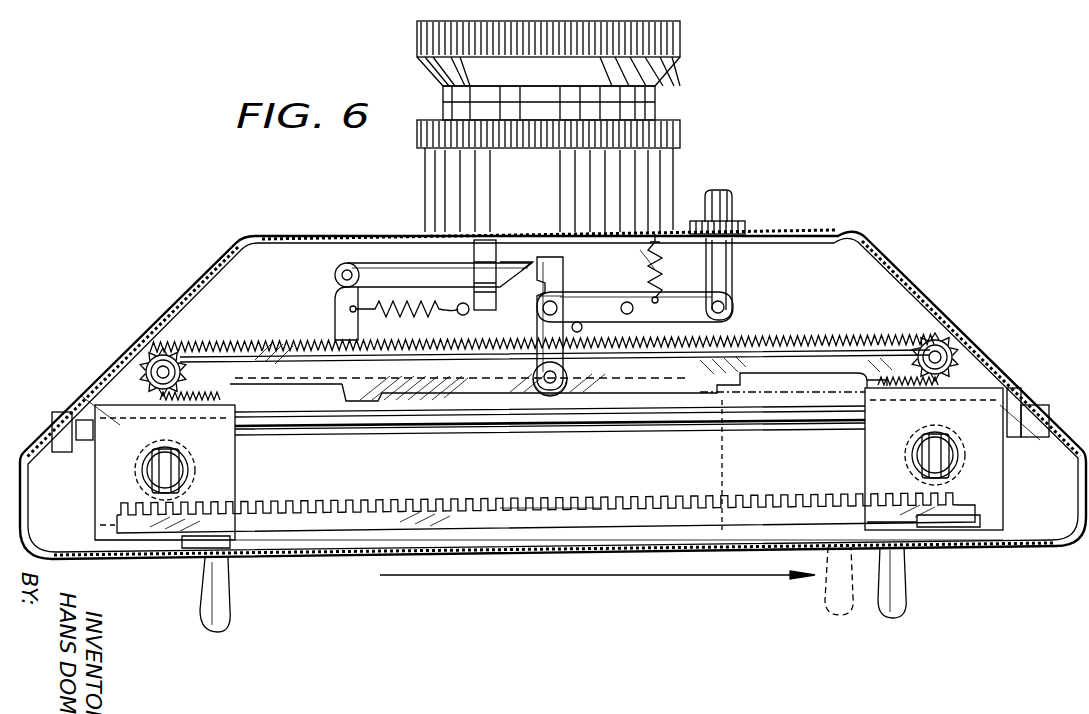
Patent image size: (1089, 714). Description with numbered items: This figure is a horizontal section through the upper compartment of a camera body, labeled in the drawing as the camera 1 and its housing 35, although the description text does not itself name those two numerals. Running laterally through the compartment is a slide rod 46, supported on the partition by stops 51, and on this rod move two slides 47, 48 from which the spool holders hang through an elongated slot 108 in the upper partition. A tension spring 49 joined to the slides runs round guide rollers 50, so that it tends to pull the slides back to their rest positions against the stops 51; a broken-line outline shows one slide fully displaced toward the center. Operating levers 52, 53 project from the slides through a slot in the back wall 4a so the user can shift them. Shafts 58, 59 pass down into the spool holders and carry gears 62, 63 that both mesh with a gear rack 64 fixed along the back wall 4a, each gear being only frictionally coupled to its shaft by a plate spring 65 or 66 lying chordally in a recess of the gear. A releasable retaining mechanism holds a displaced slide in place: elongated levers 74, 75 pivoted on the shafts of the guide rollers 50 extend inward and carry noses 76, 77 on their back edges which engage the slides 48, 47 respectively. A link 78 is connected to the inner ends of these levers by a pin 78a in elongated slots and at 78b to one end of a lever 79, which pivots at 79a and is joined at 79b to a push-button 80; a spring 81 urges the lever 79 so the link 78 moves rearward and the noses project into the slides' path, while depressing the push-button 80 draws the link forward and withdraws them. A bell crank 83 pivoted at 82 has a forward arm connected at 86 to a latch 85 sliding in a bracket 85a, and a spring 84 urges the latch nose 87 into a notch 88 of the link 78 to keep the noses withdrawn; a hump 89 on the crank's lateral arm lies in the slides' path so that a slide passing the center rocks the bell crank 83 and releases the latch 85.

The camera 1 is at (1060, 445).
The housing 35 is at (324, 236).
The back wall 4a is at (380, 575).
The slide rod 46 is at (630, 430).
The slide 47 is at (96, 508).
The slide 48 is at (866, 472).
The tension spring 49 is at (258, 345).
The guide rollers 50 is at (152, 356).
The stops 51 is at (62, 425).
The operating lever 52 is at (230, 583).
The operating lever 53 is at (884, 600).
The shaft 58 is at (180, 470).
The shaft 59 is at (947, 452).
The gear 62 is at (136, 490).
The gear 63 is at (968, 476).
The gear rack 64 is at (438, 505).
The plate spring 65 is at (150, 452).
The plate spring 66 is at (916, 442).
The lever 74 is at (255, 382).
The lever 75 is at (805, 356).
The nose 76 is at (380, 402).
The nose 77 is at (714, 396).
The link 78 is at (564, 280).
The pin 78a is at (542, 385).
The pivotal connection 78b is at (536, 298).
The lever 79 is at (625, 302).
The pivot 79a is at (648, 280).
The pivotal connection 79b is at (725, 306).
The push-button 80 is at (733, 218).
The spring 81 is at (664, 268).
The pivot 82 is at (345, 370).
The bell crank 83 is at (346, 308).
The spring 84 is at (458, 311).
The latch 85 is at (395, 262).
The bracket 85a is at (500, 262).
The pivotal connection 86 is at (336, 276).
The nose 87 is at (496, 242).
The notch 88 is at (540, 306).
The hump 89 is at (558, 396).
The slot 108 is at (532, 498).